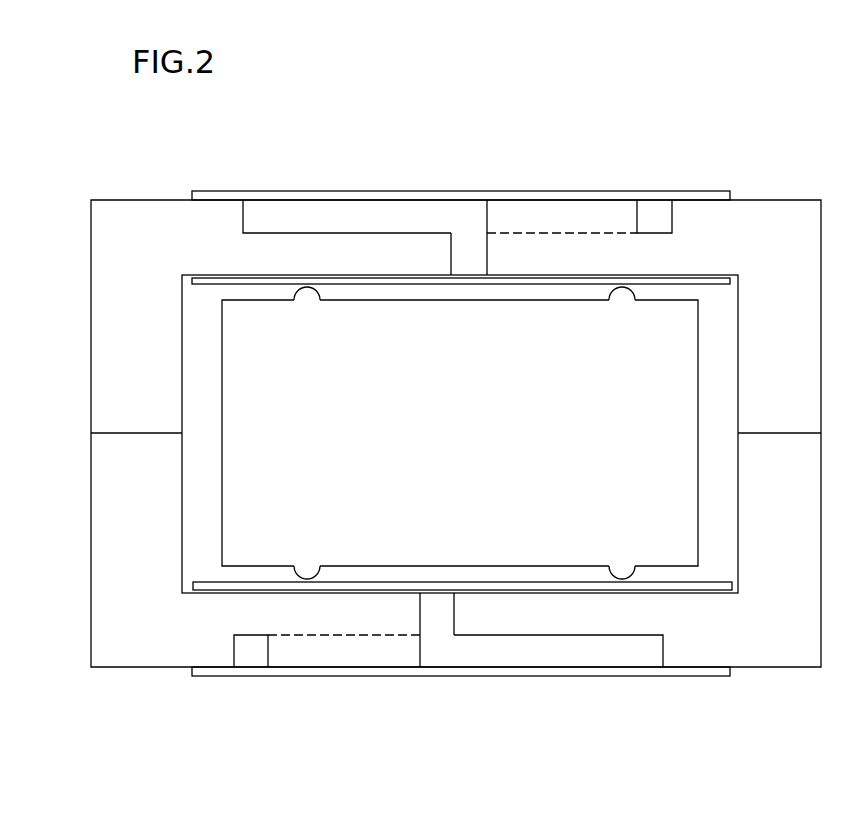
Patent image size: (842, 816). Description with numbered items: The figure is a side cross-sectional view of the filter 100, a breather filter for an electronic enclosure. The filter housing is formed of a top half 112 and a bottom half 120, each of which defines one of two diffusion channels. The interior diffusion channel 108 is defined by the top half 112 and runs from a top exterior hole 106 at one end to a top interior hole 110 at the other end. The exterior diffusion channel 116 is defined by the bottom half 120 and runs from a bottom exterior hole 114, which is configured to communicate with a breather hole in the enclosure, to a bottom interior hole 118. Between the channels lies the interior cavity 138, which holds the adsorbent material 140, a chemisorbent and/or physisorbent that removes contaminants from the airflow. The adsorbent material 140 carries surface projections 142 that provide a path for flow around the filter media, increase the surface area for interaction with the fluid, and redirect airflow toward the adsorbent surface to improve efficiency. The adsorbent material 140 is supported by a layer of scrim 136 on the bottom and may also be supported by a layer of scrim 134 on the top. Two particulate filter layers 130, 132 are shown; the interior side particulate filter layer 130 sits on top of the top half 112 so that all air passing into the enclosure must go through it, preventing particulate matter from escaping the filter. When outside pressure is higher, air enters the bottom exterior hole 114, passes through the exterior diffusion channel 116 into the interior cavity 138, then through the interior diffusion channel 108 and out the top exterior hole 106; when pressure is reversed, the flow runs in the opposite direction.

The filter 100 is at (775, 114).
The top exterior hole 106 is at (653, 215).
The interior diffusion channel 108 is at (513, 217).
The top interior hole 110 is at (465, 257).
The top half 112 is at (140, 222).
The bottom exterior hole 114 is at (248, 655).
The exterior diffusion channel 116 is at (388, 652).
The bottom interior hole 118 is at (432, 615).
The bottom half 120 is at (117, 572).
The interior side particulate filter layer 130 is at (715, 191).
The particulate filter layer 132 is at (722, 673).
The scrim layer 134 is at (731, 282).
The scrim layer 136 is at (733, 587).
The interior cavity 138 is at (735, 313).
The adsorbent material 140 is at (678, 373).
The projections 142 is at (627, 572).